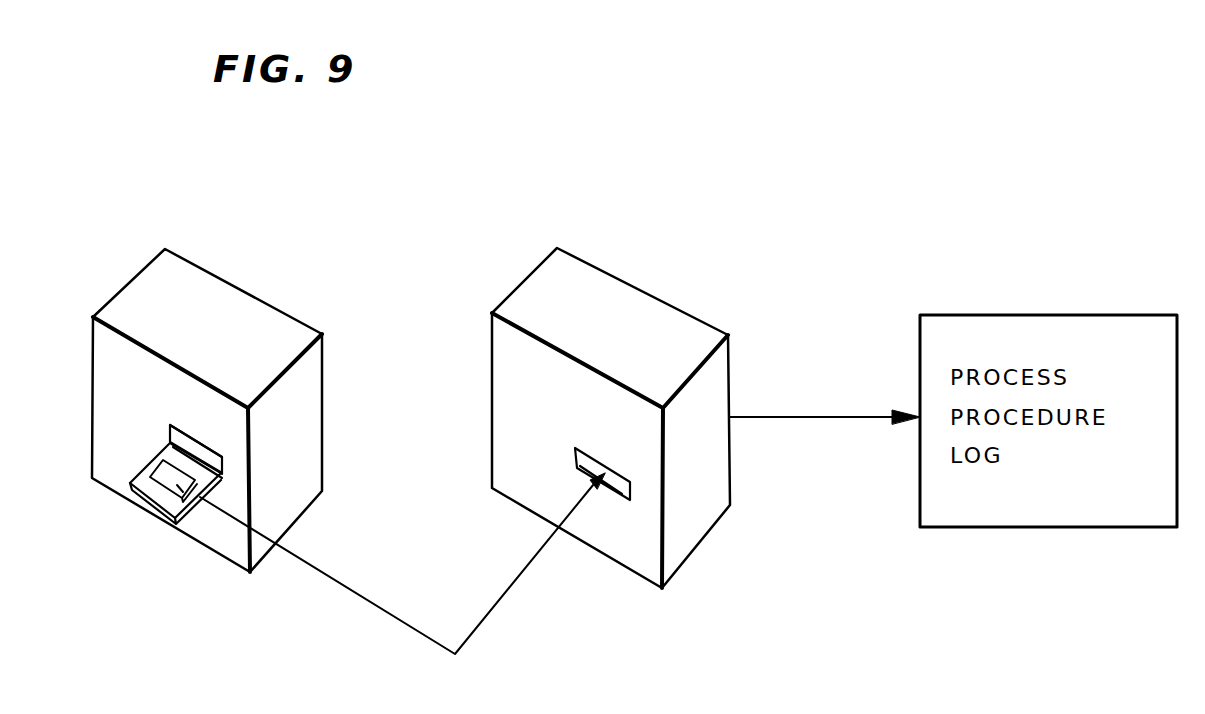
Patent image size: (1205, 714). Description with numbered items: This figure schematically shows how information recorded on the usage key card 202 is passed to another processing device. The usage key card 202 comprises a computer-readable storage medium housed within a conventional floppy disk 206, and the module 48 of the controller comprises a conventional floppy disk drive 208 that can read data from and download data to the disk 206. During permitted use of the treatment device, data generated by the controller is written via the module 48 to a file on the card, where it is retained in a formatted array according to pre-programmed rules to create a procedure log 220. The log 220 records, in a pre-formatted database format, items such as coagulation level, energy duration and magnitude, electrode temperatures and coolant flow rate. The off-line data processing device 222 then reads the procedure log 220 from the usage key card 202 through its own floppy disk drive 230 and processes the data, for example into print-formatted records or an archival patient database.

The module 48 is at (197, 280).
The floppy disk 206 is at (166, 450).
The floppy disk drive 208 is at (202, 443).
The usage key card 202 is at (156, 505).
The procedure log 220 is at (178, 487).
The off-line data processing device 222 is at (508, 345).
The floppy disk drive 230 is at (622, 485).